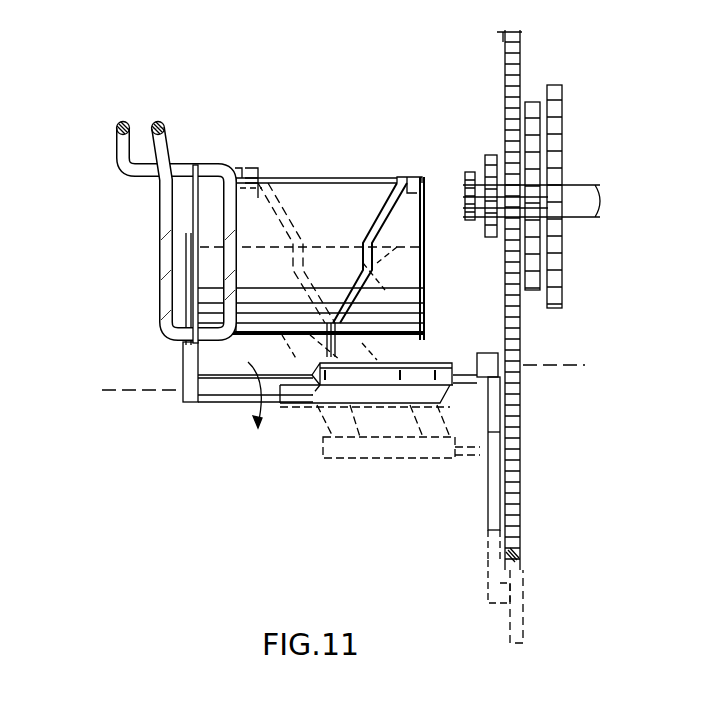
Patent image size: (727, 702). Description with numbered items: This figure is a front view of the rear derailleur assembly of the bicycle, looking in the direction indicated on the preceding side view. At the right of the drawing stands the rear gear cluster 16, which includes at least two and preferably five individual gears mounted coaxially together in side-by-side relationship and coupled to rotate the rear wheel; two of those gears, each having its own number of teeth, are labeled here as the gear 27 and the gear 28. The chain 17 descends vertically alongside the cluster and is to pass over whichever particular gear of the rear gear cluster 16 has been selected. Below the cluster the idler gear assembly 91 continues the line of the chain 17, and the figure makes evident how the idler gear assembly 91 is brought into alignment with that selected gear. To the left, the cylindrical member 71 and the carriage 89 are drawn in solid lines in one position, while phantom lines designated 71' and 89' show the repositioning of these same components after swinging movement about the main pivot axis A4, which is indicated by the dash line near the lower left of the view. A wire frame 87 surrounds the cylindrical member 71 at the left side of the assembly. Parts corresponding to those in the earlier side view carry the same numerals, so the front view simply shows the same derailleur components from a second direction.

The rear gear cluster 16 is at (560, 78).
The chain 17 is at (504, 68).
The individual gear 27 is at (532, 290).
The individual gear 28 is at (508, 238).
The cylindrical member 71 is at (310, 249).
The repositioned cylindrical member 71' is at (310, 271).
The wire frame 87 is at (117, 150).
The carriage 89 is at (378, 363).
The repositioned carriage 89' is at (398, 458).
The idler gear assembly 91 is at (524, 516).
The main pivot axis A4 is at (135, 390).